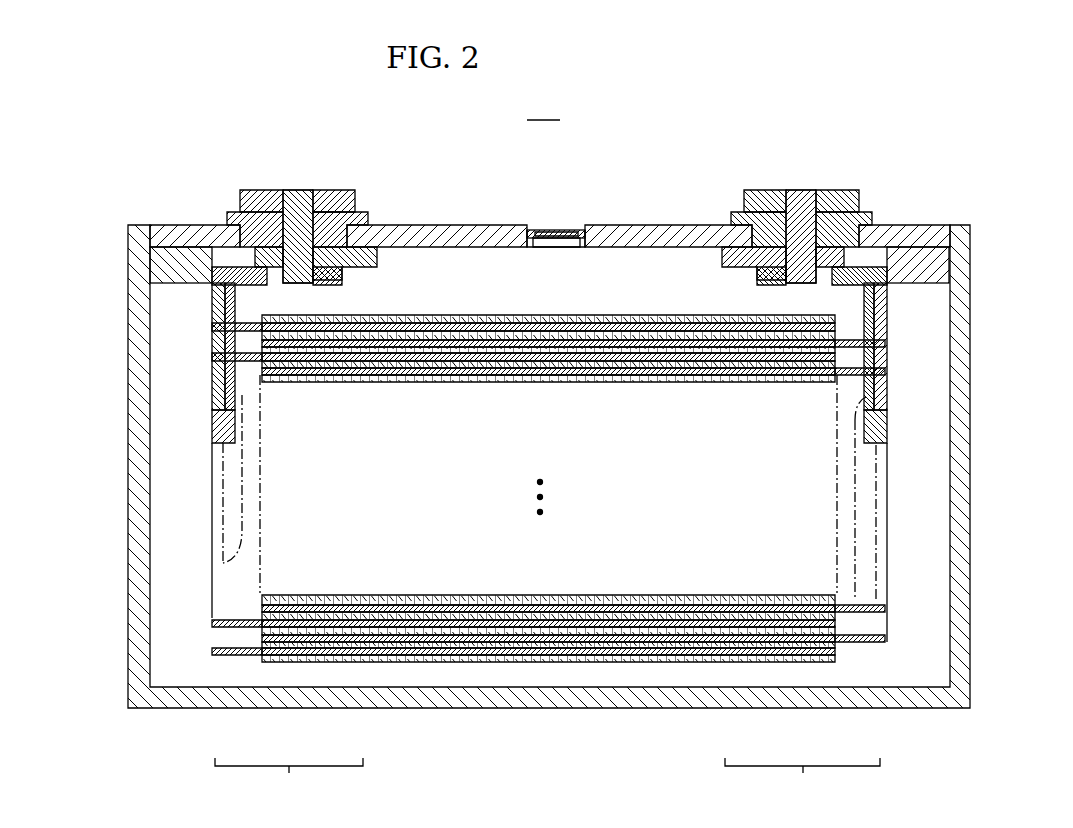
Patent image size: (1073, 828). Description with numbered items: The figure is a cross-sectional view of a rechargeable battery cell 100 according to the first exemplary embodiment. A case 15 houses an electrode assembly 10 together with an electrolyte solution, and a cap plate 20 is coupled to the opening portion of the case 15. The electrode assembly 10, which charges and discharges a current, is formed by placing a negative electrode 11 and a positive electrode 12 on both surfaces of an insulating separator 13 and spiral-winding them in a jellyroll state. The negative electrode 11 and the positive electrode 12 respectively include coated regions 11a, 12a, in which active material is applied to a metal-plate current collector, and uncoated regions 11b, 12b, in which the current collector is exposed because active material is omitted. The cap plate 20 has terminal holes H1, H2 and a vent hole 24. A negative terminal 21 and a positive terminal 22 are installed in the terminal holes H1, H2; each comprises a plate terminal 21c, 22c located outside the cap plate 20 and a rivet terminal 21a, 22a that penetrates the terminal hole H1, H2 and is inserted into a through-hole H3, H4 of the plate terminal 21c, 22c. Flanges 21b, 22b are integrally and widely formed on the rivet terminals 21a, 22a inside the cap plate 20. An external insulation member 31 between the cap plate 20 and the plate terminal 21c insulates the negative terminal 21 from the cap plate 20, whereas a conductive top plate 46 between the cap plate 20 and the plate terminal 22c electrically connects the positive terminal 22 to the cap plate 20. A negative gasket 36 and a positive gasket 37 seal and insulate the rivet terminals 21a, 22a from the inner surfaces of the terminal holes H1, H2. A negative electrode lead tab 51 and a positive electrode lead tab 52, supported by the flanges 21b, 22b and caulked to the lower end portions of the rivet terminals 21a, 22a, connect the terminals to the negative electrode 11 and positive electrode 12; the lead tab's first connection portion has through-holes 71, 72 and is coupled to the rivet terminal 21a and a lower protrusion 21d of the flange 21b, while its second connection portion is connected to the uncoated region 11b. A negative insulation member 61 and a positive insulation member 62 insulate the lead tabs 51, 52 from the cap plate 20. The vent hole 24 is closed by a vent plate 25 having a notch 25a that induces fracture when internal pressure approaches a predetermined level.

The rechargeable battery cell 100 is at (543, 106).
The electrode assembly 10 is at (547, 556).
The negative electrode 11 is at (289, 777).
The coated region 11a is at (347, 655).
The uncoated region 11b is at (230, 655).
The positive electrode 12 is at (802, 777).
The coated region 12a is at (735, 642).
The uncoated region 12b is at (868, 642).
The separator 13 is at (532, 658).
The case 15 is at (968, 425).
The cap plate 20 is at (470, 235).
The negative terminal 21 is at (302, 183).
The rivet terminal 21a is at (300, 285).
The flange 21b is at (355, 250).
The plate terminal 21c is at (258, 190).
The lower protrusion 21d is at (232, 275).
The positive terminal 22 is at (797, 183).
The rivet terminal 22a is at (875, 310).
The flange 22b is at (735, 262).
The plate terminal 22c is at (842, 190).
The vent hole 24 is at (553, 248).
The vent plate 25 is at (583, 230).
The notch 25a is at (550, 232).
The external insulation member 31 is at (365, 212).
The negative gasket 36 is at (236, 210).
The positive gasket 37 is at (864, 210).
The conductive top plate 46 is at (742, 212).
The negative electrode lead tab 51 is at (226, 305).
The positive electrode lead tab 52 is at (888, 297).
The negative insulation member 61 is at (165, 265).
The positive insulation member 62 is at (940, 262).
The through-hole 71 is at (320, 285).
The through-hole 72 is at (214, 290).
The terminal hole H1 is at (338, 190).
The terminal hole H2 is at (762, 190).
The through-hole H3 is at (292, 190).
The through-hole H4 is at (808, 190).